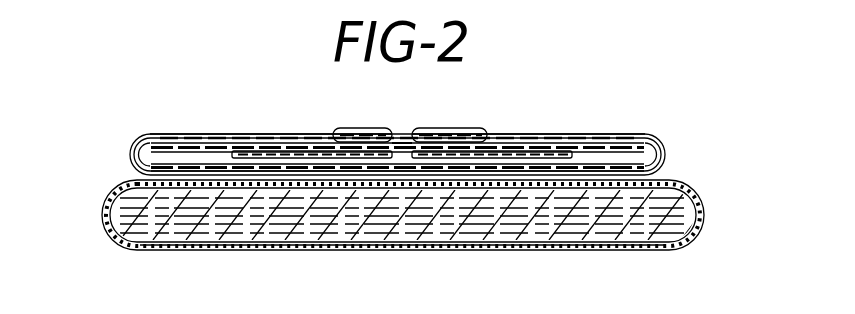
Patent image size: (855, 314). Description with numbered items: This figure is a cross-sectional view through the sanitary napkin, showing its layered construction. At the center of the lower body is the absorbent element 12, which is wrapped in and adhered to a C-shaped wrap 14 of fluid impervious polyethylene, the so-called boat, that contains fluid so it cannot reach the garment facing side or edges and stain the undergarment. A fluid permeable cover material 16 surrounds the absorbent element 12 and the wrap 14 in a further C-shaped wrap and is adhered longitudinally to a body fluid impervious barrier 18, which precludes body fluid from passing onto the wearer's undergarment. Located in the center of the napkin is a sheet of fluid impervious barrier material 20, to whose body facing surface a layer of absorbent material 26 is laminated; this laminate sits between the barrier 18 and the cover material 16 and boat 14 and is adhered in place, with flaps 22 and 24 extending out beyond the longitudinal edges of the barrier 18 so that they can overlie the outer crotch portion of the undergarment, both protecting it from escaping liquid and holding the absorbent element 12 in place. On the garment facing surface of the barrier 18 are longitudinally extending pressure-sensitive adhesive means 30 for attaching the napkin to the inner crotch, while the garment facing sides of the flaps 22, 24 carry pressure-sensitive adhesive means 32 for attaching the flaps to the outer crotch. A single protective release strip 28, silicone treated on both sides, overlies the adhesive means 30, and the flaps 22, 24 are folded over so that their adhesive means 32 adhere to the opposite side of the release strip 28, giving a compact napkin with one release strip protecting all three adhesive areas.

The absorbent element 12 is at (292, 213).
The C-shaped wrap 14 is at (106, 210).
The cover material 16 is at (483, 250).
The barrier 18 is at (662, 162).
The barrier material 20 is at (131, 153).
The flap 22 is at (190, 135).
The flap 24 is at (607, 135).
The layer of absorbent material 26 is at (152, 134).
The release strip 28 is at (403, 147).
The pressure-sensitive adhesive means 30 is at (272, 139).
The pressure-sensitive adhesive means 32 is at (330, 150).